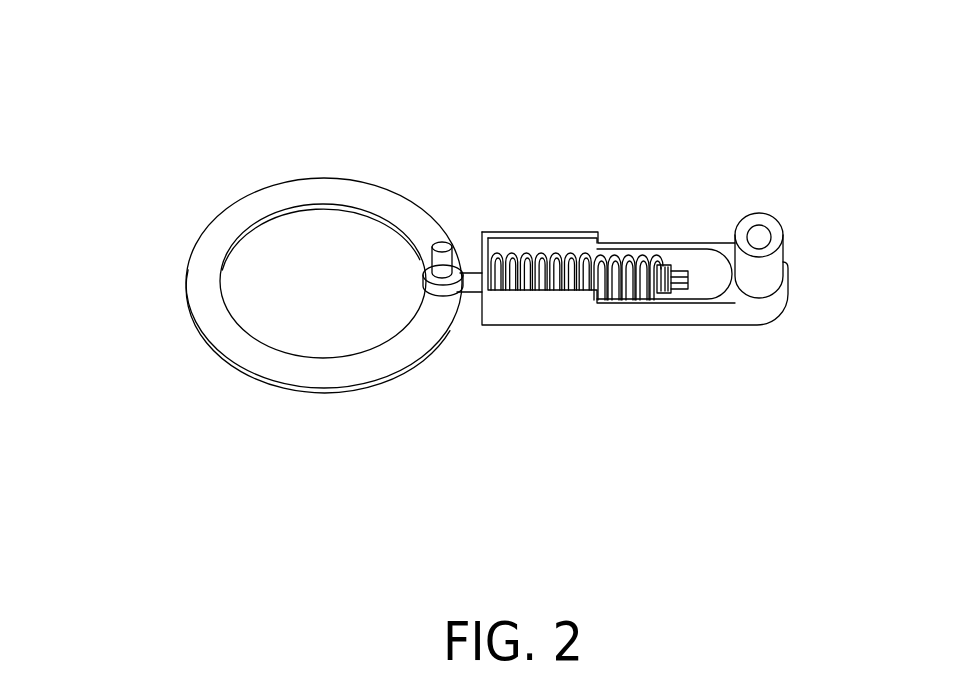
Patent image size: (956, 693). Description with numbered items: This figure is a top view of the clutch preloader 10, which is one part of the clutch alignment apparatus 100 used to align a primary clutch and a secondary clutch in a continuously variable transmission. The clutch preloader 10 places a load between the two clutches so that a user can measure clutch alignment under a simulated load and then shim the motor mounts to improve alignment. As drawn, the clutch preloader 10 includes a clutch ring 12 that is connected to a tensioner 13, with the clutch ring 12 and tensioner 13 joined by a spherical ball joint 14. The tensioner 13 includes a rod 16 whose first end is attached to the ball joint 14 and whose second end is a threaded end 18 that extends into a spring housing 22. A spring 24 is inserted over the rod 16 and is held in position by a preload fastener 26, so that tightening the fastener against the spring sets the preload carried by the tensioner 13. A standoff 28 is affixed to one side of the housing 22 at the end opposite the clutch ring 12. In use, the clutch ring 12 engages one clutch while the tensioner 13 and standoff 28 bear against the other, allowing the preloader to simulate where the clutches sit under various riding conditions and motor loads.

The clutch alignment apparatus 100 is at (430, 287).
The clutch preloader 10 is at (208, 177).
The clutch ring 12 is at (327, 373).
The tensioner 13 is at (653, 352).
The spherical ball joint 14 is at (445, 290).
The rod 16 is at (470, 272).
The threaded end 18 is at (661, 290).
The spring housing 22 is at (514, 232).
The spring 24 is at (586, 250).
The preload fastener 26 is at (672, 258).
The standoff 28 is at (760, 237).